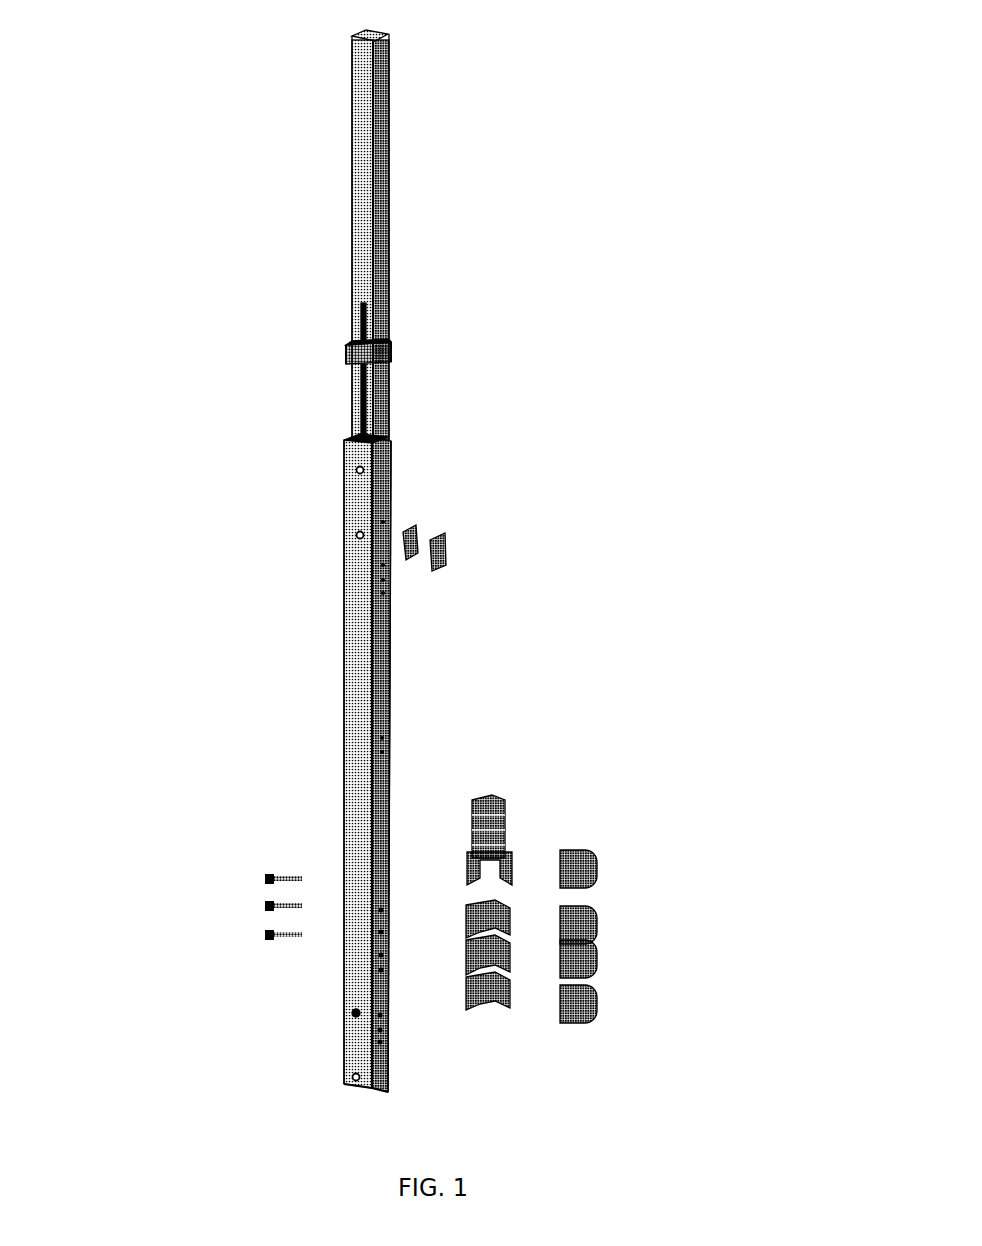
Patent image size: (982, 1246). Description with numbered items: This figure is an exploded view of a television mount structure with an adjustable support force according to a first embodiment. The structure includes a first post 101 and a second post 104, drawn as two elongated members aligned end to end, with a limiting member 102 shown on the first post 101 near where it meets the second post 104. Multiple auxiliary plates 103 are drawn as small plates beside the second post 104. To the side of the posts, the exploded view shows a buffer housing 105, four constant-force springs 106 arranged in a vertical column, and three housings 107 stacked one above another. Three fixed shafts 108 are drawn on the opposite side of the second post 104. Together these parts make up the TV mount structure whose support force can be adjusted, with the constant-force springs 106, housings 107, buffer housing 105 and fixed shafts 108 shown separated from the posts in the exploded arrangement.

The first post 101 is at (389, 112).
The limiting member 102 is at (388, 352).
The auxiliary plates 103 is at (445, 540).
The second post 104 is at (392, 612).
The buffer housing 105 is at (497, 797).
The constant-force springs 106 is at (595, 863).
The housings 107 is at (512, 923).
The fixed shafts 108 is at (257, 938).